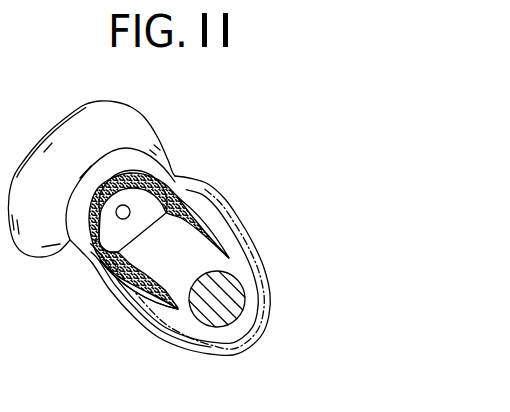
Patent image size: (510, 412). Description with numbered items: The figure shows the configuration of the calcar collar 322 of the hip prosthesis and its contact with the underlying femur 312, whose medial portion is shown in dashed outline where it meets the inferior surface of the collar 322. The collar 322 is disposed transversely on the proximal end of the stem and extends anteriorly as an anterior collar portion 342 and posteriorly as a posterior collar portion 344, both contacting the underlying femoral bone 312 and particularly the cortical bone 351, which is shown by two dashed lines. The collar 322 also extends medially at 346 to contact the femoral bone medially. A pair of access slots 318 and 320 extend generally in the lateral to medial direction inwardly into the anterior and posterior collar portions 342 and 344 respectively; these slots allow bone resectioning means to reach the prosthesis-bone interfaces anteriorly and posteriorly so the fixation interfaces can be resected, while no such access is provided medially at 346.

The femur 312 is at (91, 100).
The access slot 318 is at (122, 290).
The access slot 320 is at (198, 200).
The collar 322 is at (258, 277).
The anterior collar portion 342 is at (139, 317).
The posterior collar portion 344 is at (227, 217).
The medial collar extension 346 is at (246, 341).
The cortical bone 351 is at (210, 333).